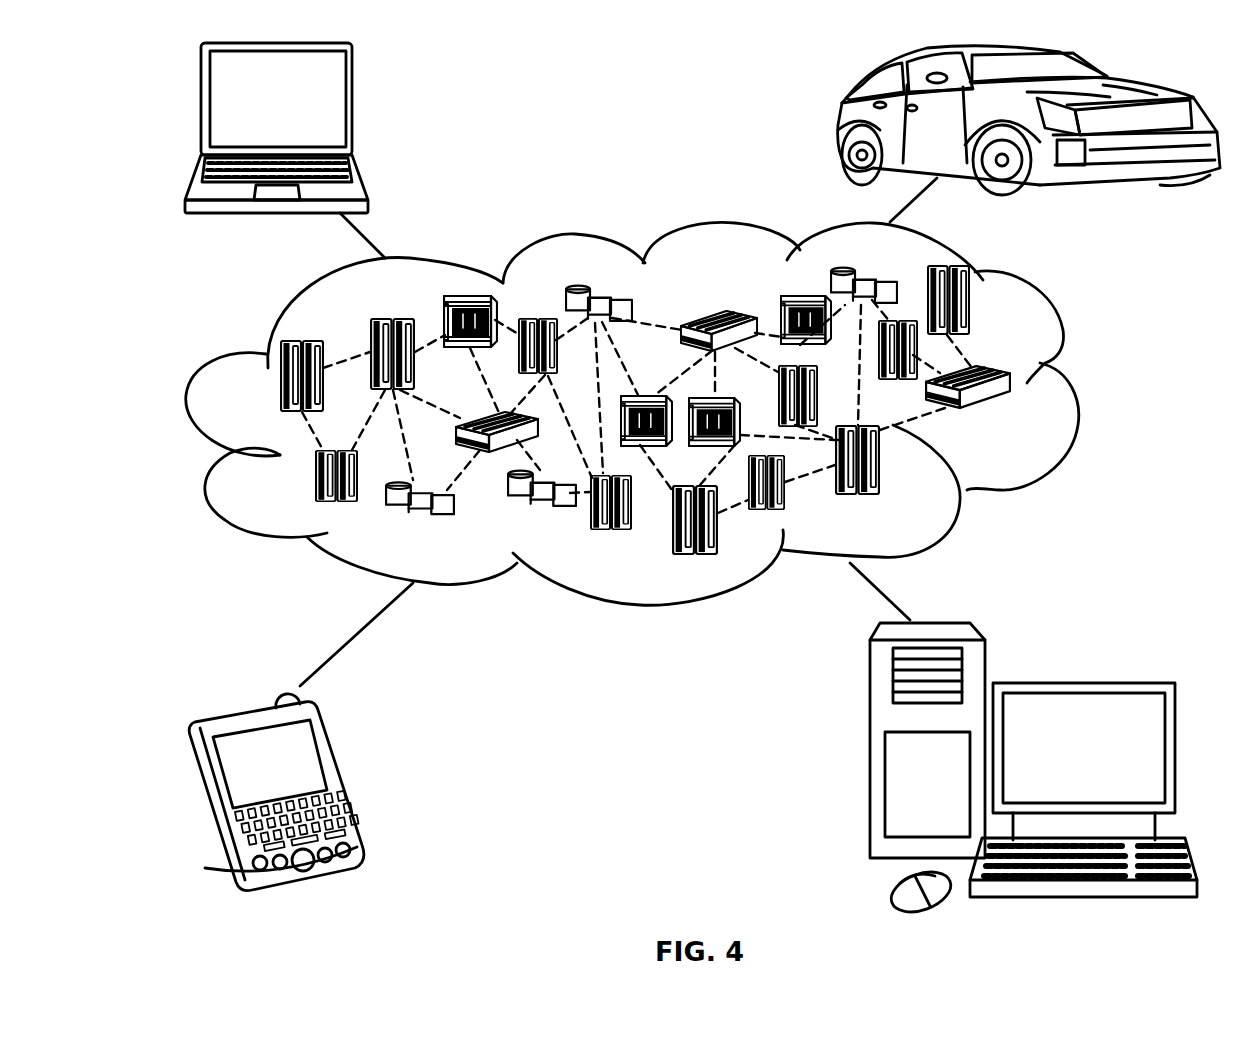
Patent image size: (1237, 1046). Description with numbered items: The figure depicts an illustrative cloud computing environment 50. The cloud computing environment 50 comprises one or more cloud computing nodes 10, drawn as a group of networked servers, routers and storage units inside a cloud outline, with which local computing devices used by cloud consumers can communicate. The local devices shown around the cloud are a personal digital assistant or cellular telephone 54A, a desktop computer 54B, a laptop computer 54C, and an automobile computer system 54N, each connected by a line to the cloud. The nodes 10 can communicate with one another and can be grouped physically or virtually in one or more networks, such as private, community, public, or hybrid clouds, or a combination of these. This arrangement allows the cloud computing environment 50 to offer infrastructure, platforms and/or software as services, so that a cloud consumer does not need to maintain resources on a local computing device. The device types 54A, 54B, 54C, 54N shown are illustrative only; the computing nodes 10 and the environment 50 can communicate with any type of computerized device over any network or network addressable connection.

The cloud computing node 10 is at (705, 410).
The cloud computing environment 50 is at (1083, 388).
The personal digital assistant or cellular telephone 54A is at (342, 778).
The desktop computer 54B is at (1078, 682).
The laptop computer 54C is at (353, 107).
The automobile computer system 54N is at (837, 122).